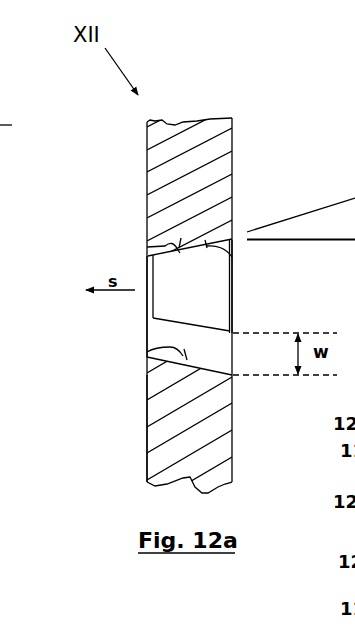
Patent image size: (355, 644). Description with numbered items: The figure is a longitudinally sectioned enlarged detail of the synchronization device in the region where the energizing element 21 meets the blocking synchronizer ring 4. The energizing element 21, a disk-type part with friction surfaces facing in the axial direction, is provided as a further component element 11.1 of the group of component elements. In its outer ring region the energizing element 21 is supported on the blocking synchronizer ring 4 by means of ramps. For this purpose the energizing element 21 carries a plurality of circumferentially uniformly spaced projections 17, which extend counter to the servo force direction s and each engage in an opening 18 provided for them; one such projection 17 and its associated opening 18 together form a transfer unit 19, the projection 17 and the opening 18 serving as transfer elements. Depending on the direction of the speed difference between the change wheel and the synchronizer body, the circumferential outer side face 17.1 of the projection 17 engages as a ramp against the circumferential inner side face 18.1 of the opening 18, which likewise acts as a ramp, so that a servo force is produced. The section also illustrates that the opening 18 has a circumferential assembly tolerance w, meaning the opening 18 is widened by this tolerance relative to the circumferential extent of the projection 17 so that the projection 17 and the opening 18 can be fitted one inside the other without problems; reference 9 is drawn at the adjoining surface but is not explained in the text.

The blocking synchronizer ring 4 is at (236, 134).
The sealing element 9 is at (231, 222).
The projection 17 is at (160, 278).
The circumferential outer side face 17.1 is at (147, 247).
The opening 18 is at (146, 345).
The circumferential inner side face 18.1 is at (232, 261).
The transfer unit 19 is at (130, 238).
The energizing element 21 is at (235, 289).
The component element 11.1 is at (136, 398).